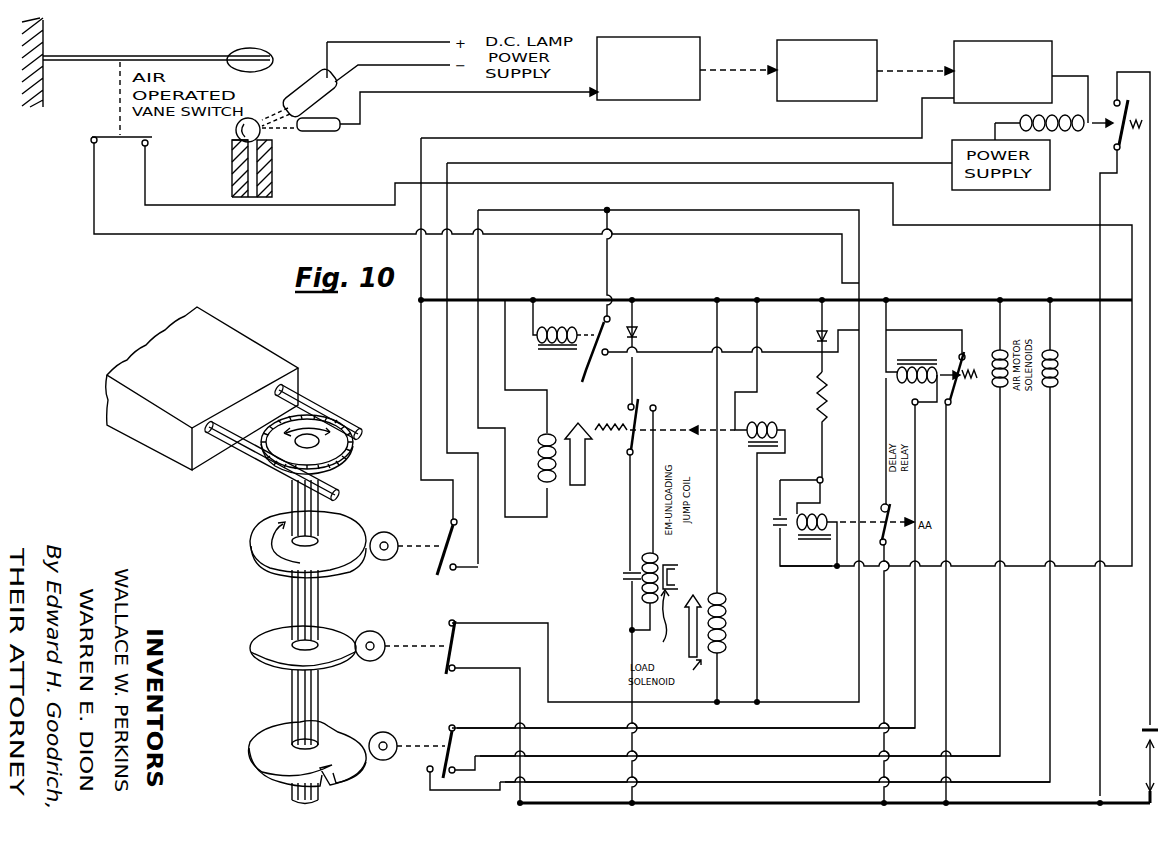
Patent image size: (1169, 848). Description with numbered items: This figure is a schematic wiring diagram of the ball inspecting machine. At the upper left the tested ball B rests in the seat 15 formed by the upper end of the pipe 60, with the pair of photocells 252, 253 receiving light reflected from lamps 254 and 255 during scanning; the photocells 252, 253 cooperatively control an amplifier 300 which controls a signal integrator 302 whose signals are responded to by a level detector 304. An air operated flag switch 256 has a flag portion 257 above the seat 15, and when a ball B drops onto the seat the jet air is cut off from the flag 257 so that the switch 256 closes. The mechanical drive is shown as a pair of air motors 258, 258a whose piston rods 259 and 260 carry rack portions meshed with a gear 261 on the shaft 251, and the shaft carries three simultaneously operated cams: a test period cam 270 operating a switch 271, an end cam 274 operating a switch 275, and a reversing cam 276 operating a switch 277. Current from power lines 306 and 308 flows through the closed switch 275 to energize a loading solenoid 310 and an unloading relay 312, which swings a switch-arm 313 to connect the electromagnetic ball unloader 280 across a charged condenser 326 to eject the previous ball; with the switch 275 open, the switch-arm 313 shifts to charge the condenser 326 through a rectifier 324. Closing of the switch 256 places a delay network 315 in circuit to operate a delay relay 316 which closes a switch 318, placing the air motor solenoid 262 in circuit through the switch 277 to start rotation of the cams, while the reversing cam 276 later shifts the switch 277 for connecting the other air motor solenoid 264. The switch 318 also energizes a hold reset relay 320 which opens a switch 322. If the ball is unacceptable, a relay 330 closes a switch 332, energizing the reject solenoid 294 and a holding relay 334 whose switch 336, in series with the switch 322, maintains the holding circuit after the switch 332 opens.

The flag portion 257 is at (250, 52).
The lamp 254 is at (309, 90).
The lamp 255 is at (306, 94).
The air operated flag switch 256 is at (106, 137).
The ball B is at (235, 131).
The ball seat 15 is at (232, 153).
The pipe 60 is at (240, 183).
The photocell 252 is at (322, 133).
The photocell 253 is at (468, 133).
The amplifier 300 is at (628, 100).
The signal integrator 302 is at (806, 101).
The level detector 304 is at (1003, 72).
The relay 330 is at (1060, 130).
The switch 332 is at (1112, 140).
The air motor 258a is at (245, 350).
The air motor 258 is at (136, 434).
The piston rod 260 is at (340, 418).
The gear 261 is at (353, 452).
The piston rod 259 is at (265, 471).
The shaft 251 is at (305, 600).
The test period cam 270 is at (270, 556).
The switch 271 is at (445, 539).
The end cam 274 is at (278, 658).
The switch 275 is at (445, 669).
The reversing cam 276 is at (268, 750).
The switch 277 is at (446, 735).
The holding relay 334 is at (554, 340).
The switch 336 is at (708, 359).
The rectifier 324 is at (639, 334).
The switch-arm 313 is at (628, 410).
The reject solenoid 294 is at (556, 481).
The condenser 326 is at (622, 579).
The electromagnetic ball unloader 280 is at (661, 610).
The loading solenoid 310 is at (718, 660).
The unloading relay 312 is at (748, 440).
The delay network 315 is at (816, 385).
The delay relay 316 is at (805, 521).
The switch 318 is at (898, 534).
The hold reset relay 320 is at (913, 402).
The switch 322 is at (953, 400).
The air motor solenoid 262 is at (1008, 388).
The air motor solenoid 264 is at (1058, 388).
The power line 308 is at (1140, 727).
The power line 306 is at (1072, 806).